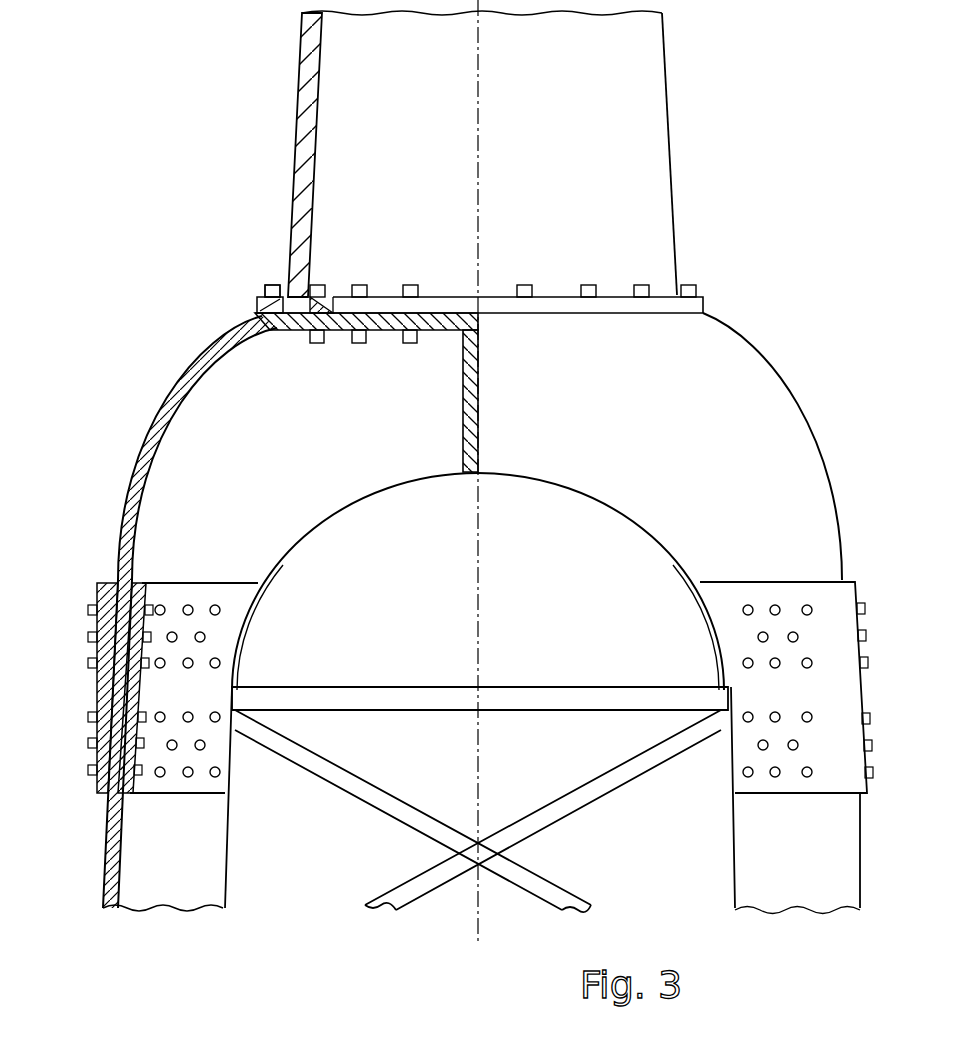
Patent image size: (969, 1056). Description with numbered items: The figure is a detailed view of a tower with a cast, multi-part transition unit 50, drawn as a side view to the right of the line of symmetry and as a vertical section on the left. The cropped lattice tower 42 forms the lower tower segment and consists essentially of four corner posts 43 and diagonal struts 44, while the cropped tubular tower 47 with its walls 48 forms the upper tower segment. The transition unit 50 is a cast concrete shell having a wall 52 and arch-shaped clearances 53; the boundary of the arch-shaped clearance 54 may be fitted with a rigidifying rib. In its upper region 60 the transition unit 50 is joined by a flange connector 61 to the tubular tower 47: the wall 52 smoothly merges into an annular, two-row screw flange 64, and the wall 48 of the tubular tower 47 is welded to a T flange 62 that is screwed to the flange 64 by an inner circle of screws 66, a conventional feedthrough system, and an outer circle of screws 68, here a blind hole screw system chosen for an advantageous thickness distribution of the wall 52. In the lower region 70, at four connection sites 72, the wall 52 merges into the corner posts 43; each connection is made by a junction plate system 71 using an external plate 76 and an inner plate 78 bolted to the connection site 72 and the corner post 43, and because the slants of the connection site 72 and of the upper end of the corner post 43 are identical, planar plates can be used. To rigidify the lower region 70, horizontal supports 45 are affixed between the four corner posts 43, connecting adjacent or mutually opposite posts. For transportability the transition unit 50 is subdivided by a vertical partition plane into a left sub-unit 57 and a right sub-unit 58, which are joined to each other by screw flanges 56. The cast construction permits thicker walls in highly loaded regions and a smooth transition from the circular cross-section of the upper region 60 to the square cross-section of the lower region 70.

The lattice tower 42 is at (735, 836).
The corner post 43 is at (835, 870).
The diagonal strut 44 is at (345, 780).
The horizontal support 45 is at (440, 700).
The tubular tower 47 is at (645, 138).
The wall 48 is at (305, 128).
The transition unit 50 is at (796, 446).
The wall 52 is at (172, 412).
The arch-shaped clearance 53 is at (656, 548).
The arch-shaped clearance boundary 54 is at (565, 485).
The screw flange 56 is at (465, 470).
The left sub-unit 57 is at (245, 390).
The right sub-unit 58 is at (760, 378).
The upper region 60 is at (706, 288).
The flange connector 61 is at (703, 305).
The T flange 62 is at (262, 303).
The screw flange 64 is at (265, 318).
The inner circle of screws 66 is at (325, 293).
The outer circle of screws 68 is at (270, 290).
The lower region 70 is at (876, 656).
The junction plate system 71 is at (858, 768).
The connection site 72 is at (108, 603).
The external plate 76 is at (112, 643).
The inner plate 78 is at (122, 690).